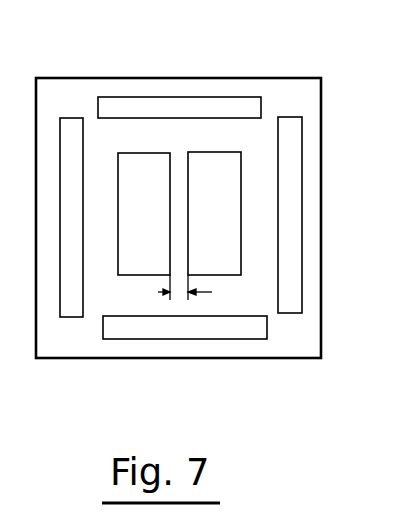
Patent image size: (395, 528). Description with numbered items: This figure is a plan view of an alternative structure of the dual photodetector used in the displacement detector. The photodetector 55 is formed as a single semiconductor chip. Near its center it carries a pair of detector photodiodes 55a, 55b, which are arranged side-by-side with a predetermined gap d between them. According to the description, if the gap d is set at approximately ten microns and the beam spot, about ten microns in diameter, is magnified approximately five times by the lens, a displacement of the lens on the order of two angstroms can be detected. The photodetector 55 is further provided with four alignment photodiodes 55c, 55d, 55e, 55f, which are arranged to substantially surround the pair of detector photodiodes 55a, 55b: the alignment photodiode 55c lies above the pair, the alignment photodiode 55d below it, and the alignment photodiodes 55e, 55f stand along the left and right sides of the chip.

The photodetector 55 is at (287, 347).
The detector photodiode 55a is at (167, 225).
The detector photodiode 55b is at (236, 224).
The alignment photodiode 55c is at (233, 102).
The alignment photodiode 55d is at (143, 332).
The alignment photodiode 55e is at (69, 125).
The alignment photodiode 55f is at (288, 125).
The gap d is at (222, 289).